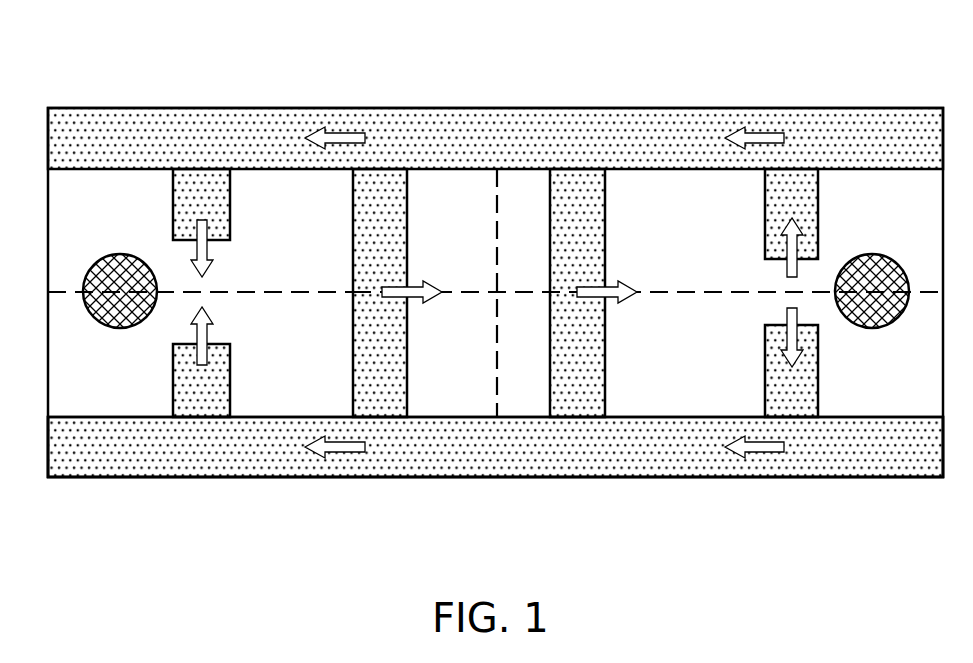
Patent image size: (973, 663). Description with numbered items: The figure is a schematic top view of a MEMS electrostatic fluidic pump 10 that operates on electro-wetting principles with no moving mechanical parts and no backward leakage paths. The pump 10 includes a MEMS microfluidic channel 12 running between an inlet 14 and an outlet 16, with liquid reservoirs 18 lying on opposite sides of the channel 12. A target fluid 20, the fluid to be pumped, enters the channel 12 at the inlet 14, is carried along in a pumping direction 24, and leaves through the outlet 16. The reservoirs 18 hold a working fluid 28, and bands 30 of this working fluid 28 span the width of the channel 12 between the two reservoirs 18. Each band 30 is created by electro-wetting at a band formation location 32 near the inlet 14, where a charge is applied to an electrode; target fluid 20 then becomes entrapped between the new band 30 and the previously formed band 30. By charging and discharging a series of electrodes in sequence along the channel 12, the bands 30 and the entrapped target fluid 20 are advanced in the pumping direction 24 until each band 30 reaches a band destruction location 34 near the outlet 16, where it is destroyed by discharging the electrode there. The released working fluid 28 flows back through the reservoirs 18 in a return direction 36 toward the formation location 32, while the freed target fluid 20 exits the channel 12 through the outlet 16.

The MEMS electrostatic fluidic pump 10 is at (840, 50).
The MEMS microfluidic channel 12 is at (445, 200).
The inlet 14 is at (118, 332).
The outlet 16 is at (870, 328).
The liquid reservoirs 18 is at (657, 128).
The target fluid 20 is at (264, 407).
The pumping direction 24 is at (430, 283).
The working fluid 28 is at (390, 407).
The bands 30 is at (377, 203).
The band formation location 32 is at (178, 258).
The band destruction location 34 is at (770, 277).
The return direction 36 is at (762, 453).